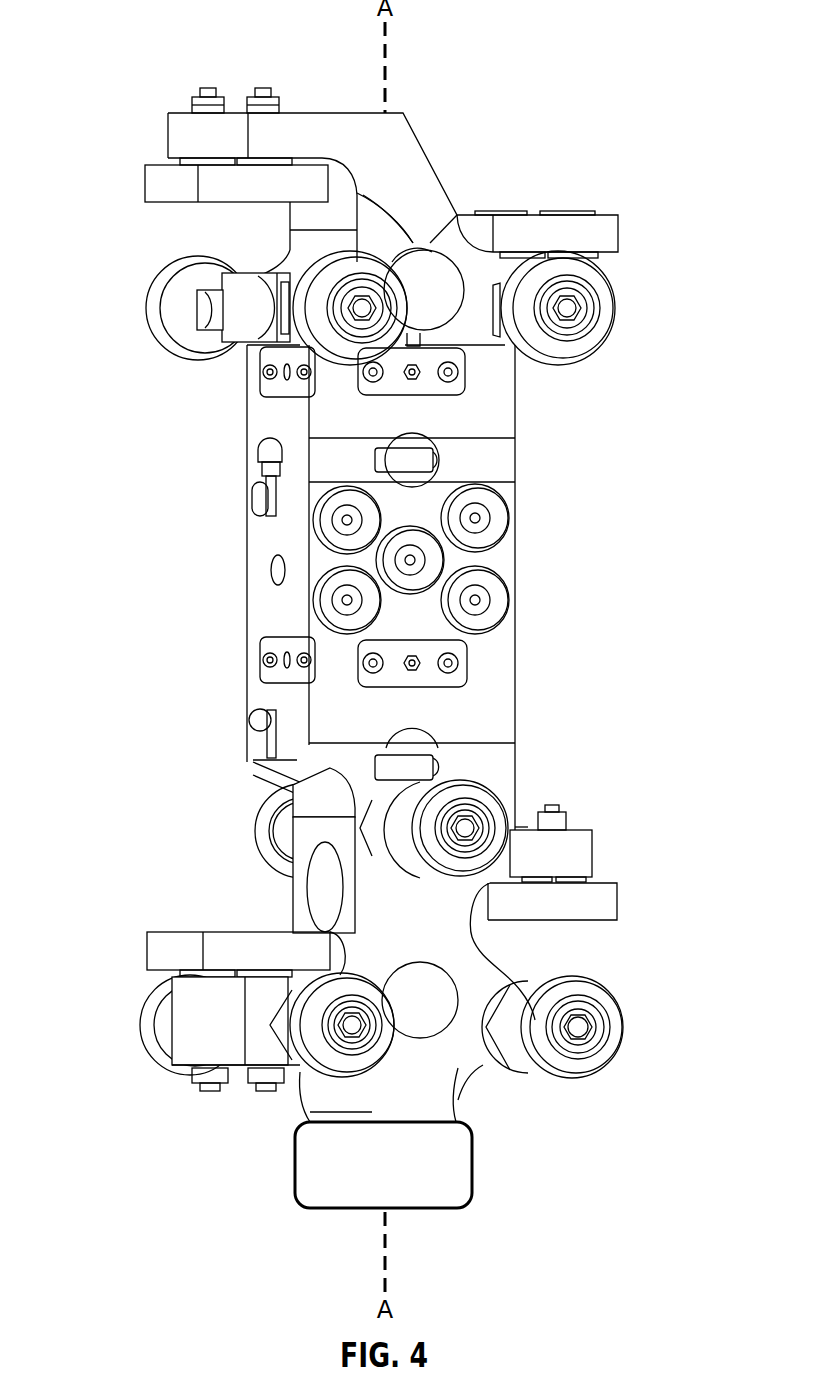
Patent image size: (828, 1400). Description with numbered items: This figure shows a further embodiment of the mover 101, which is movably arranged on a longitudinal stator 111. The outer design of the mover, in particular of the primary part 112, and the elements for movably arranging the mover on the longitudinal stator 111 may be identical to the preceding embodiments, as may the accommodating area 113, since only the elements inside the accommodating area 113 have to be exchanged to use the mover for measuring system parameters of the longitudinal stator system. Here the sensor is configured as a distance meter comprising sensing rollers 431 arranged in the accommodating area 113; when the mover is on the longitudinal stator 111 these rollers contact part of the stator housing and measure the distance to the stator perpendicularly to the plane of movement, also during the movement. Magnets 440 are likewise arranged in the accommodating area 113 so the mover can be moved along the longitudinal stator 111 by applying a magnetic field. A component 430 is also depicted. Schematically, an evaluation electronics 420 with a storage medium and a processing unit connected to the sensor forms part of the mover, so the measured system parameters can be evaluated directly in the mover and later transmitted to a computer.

The mover 101 is at (130, 459).
The longitudinal stator 111 is at (612, 237).
The primary part 112 is at (465, 962).
The accommodating area 113 is at (560, 598).
The evaluation electronics 420 is at (406, 1178).
The support bar 430 is at (265, 626).
The sensing rollers 431 is at (390, 456).
The magnets 440 is at (450, 600).